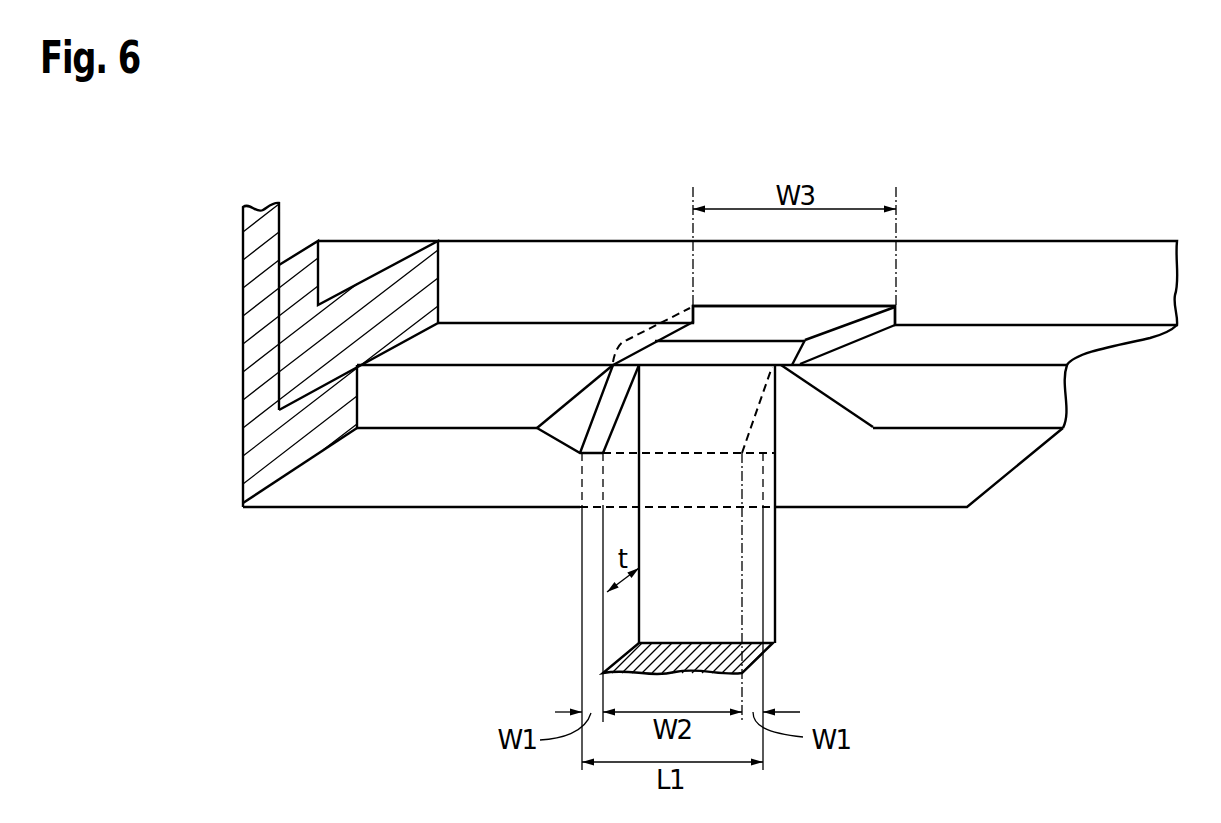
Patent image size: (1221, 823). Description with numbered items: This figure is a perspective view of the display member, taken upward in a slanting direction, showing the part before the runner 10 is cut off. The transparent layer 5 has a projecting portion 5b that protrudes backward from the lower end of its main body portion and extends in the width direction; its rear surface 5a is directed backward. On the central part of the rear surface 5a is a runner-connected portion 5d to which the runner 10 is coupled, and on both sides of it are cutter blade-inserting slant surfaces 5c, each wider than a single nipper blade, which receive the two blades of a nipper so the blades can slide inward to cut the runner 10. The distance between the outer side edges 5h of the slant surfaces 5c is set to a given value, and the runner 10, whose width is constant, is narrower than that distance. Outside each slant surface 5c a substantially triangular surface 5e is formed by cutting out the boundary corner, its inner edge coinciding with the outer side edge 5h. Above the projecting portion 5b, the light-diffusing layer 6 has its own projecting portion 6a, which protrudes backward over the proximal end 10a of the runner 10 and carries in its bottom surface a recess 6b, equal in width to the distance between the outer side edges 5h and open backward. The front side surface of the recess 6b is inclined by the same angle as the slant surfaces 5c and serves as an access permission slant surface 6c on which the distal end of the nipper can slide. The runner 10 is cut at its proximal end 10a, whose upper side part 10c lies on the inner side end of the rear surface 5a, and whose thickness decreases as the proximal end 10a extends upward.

The transparent layer 5 is at (253, 331).
The rear surface 5a is at (598, 402).
The projecting portion 5b is at (302, 449).
The cutter blade-inserting slant surface 5c is at (623, 432).
The runner-connected portion 5d is at (688, 440).
The triangular surface 5e is at (623, 432).
The outer side edge 5h is at (408, 415).
The light-diffusing layer 6 is at (298, 252).
The projecting portion 6a is at (383, 270).
The recess 6b is at (838, 317).
The access permission slant surface 6c is at (778, 353).
The runner 10 is at (773, 620).
The proximal end 10a is at (580, 453).
The upper side part 10c is at (653, 393).